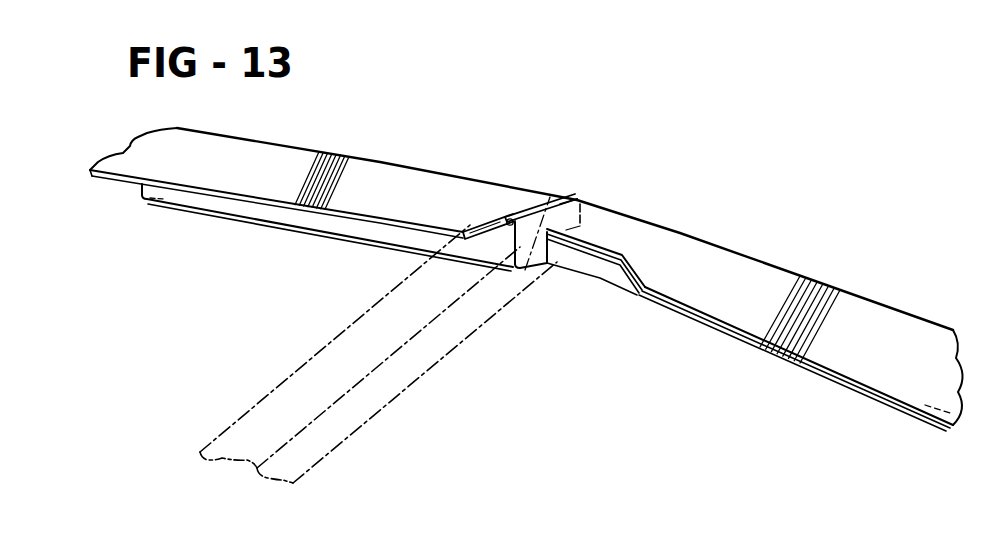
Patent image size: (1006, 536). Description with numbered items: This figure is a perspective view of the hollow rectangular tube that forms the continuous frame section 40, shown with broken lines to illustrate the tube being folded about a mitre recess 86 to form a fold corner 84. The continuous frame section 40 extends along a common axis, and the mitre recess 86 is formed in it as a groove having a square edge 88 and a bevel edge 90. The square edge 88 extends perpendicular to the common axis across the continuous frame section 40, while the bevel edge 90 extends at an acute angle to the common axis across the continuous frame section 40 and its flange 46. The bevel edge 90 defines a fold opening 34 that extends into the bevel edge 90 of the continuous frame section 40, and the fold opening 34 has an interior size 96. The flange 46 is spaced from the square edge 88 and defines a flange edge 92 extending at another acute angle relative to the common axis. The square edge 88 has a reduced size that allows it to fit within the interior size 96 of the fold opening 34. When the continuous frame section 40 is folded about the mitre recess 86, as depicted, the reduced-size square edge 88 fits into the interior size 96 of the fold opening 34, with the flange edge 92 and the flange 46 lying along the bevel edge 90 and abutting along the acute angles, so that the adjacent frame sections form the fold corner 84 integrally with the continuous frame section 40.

The continuous frame section 40 is at (733, 208).
The flange 46 is at (240, 178).
The fold opening 34 is at (540, 220).
The fold corner 84 is at (565, 189).
The mitre recess 86 is at (533, 247).
The square edge 88 is at (555, 220).
The bevel edge 90 is at (527, 217).
The flange edge 92 is at (640, 283).
The interior size 96 is at (500, 218).